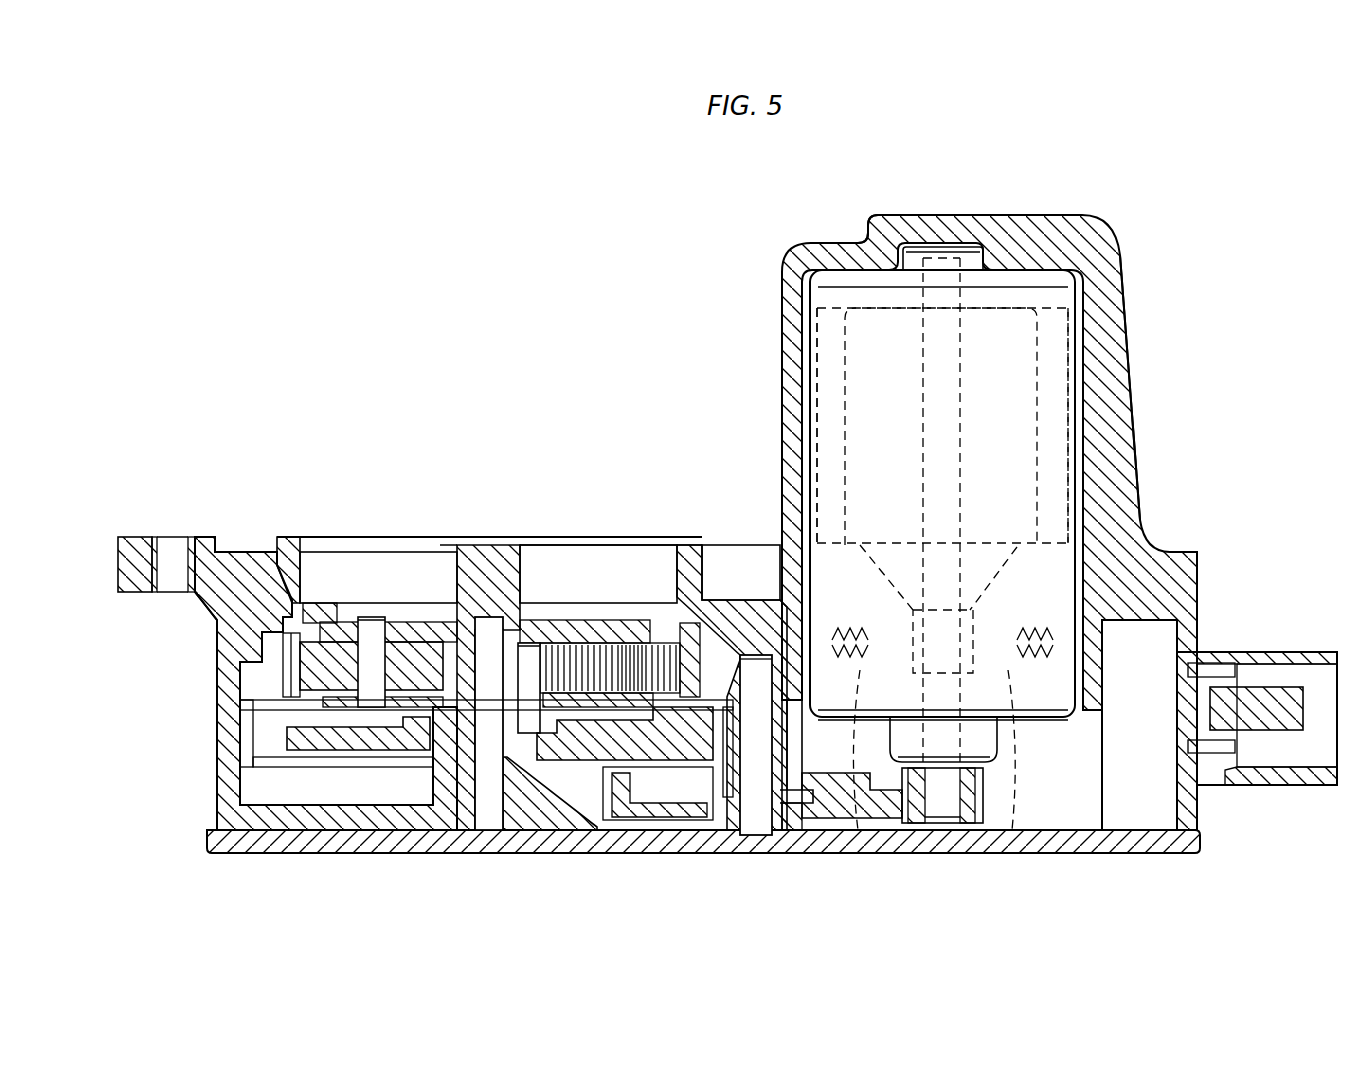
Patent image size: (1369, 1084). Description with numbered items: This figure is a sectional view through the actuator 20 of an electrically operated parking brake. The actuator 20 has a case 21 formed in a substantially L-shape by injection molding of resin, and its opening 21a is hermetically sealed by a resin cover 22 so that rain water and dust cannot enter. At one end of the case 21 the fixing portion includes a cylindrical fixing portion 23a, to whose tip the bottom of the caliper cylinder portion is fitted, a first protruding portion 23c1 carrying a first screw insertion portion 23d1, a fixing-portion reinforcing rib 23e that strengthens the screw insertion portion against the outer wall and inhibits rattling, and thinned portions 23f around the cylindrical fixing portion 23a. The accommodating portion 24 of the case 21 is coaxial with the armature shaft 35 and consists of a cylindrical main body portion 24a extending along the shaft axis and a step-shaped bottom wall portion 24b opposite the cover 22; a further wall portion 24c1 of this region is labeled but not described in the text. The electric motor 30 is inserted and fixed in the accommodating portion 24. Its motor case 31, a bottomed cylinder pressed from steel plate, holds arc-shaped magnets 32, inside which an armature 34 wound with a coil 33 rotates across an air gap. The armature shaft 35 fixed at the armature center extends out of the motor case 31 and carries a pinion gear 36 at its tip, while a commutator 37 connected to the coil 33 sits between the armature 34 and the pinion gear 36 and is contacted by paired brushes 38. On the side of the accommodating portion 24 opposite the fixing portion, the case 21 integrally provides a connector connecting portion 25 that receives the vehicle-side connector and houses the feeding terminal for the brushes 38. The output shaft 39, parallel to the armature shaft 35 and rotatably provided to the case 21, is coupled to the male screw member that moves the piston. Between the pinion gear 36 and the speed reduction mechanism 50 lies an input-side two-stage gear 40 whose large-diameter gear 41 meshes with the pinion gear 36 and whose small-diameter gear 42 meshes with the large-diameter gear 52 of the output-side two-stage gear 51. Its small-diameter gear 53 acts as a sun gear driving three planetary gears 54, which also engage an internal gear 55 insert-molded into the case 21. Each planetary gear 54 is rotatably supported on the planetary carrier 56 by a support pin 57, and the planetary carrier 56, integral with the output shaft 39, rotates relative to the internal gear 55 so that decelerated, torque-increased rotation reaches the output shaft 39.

The actuator 20 is at (548, 392).
The case 21 is at (232, 635).
The opening 21a is at (1108, 831).
The cover 22 is at (560, 830).
The cylindrical fixing portion 23a is at (697, 585).
The first protruding portion 23c1 is at (138, 537).
The first screw insertion portion 23d1 is at (178, 537).
The fixing-portion reinforcing rib 23e is at (207, 598).
The thinned portion 23f is at (740, 590).
The accommodating portion 24 is at (776, 284).
The cylindrical main body portion 24a is at (800, 350).
The step-shaped bottom wall portion 24b is at (848, 250).
The holder housing inclined side wall 24c1 is at (1130, 480).
The connector connecting portion 25 is at (1296, 652).
The electric motor 30 is at (1097, 407).
The motor case 31 is at (1018, 292).
The magnet 32 is at (832, 413).
The coil 33 is at (1100, 555).
The armature 34 is at (900, 348).
The armature shaft 35 is at (948, 250).
The pinion gear 36 is at (975, 795).
The commutator 37 is at (1005, 830).
The brush 38 is at (1130, 580).
The output shaft 39 is at (485, 575).
The input-side two-stage gear 40 is at (669, 818).
The large-diameter gear 41 is at (905, 770).
The small-diameter gear 42 is at (745, 790).
The speed reduction mechanism 50 is at (278, 608).
The output-side two-stage gear 51 is at (395, 760).
The large-diameter gear 52 is at (290, 760).
The small-diameter gear 53 is at (460, 800).
The planetary gear 54 is at (400, 665).
The internal gear 55 is at (282, 678).
The planetary carrier 56 is at (660, 690).
The support pin 57 is at (367, 618).